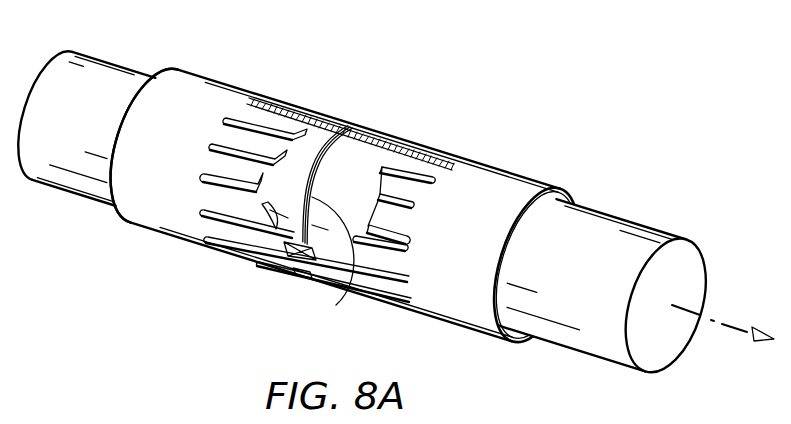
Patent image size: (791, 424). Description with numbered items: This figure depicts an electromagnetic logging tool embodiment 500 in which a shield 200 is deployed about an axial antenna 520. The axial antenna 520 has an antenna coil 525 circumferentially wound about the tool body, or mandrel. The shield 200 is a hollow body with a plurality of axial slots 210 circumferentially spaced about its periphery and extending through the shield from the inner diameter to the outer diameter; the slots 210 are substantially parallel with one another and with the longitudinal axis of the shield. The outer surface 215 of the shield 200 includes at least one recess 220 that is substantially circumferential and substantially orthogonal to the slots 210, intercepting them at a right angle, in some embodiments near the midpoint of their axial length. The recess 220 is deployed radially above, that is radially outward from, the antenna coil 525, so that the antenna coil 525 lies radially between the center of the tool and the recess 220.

The shield 200 is at (497, 148).
The axial slots 210 is at (414, 205).
The outer surface 215 is at (203, 75).
The recess 220 is at (286, 258).
The logging tool embodiment 500 is at (661, 203).
The axial antenna 520 is at (339, 166).
The antenna coil 525 is at (336, 305).